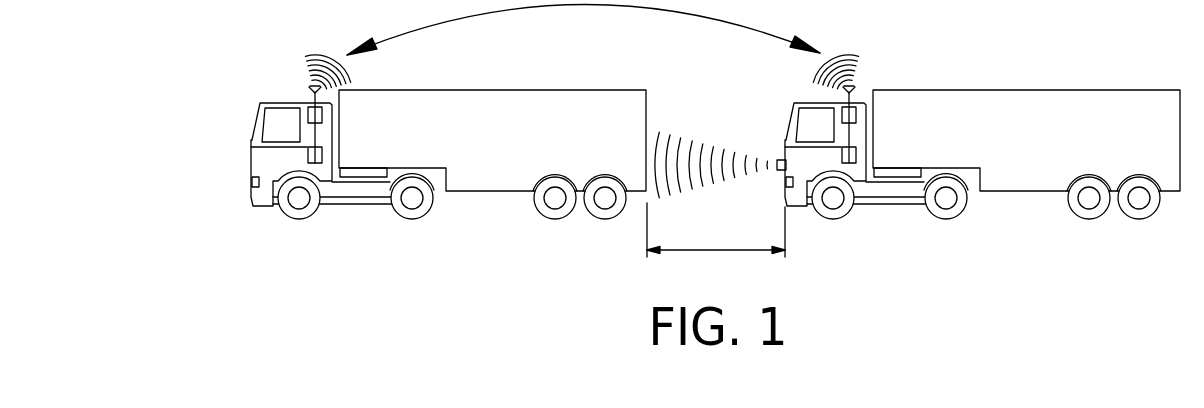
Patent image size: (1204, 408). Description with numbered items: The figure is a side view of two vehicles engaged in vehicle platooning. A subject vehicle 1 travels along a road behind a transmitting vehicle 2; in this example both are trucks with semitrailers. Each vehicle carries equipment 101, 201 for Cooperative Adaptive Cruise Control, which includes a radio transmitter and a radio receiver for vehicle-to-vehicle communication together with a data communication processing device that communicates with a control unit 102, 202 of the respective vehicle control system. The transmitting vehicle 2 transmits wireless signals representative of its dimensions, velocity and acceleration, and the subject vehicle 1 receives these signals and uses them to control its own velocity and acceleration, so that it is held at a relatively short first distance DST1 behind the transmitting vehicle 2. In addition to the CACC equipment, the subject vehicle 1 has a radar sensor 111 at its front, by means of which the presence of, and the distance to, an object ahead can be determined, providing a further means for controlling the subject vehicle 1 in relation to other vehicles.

The subject vehicle 1 is at (1023, 88).
The transmitting vehicle 2 is at (493, 88).
The equipment for Cooperative Adaptive Cruise Control 101 is at (856, 92).
The control unit 102 is at (856, 156).
The radar sensor 111 is at (777, 161).
The equipment for Cooperative Adaptive Cruise Control 201 is at (311, 95).
The control unit 202 is at (307, 155).
The first distance DST1 is at (716, 230).